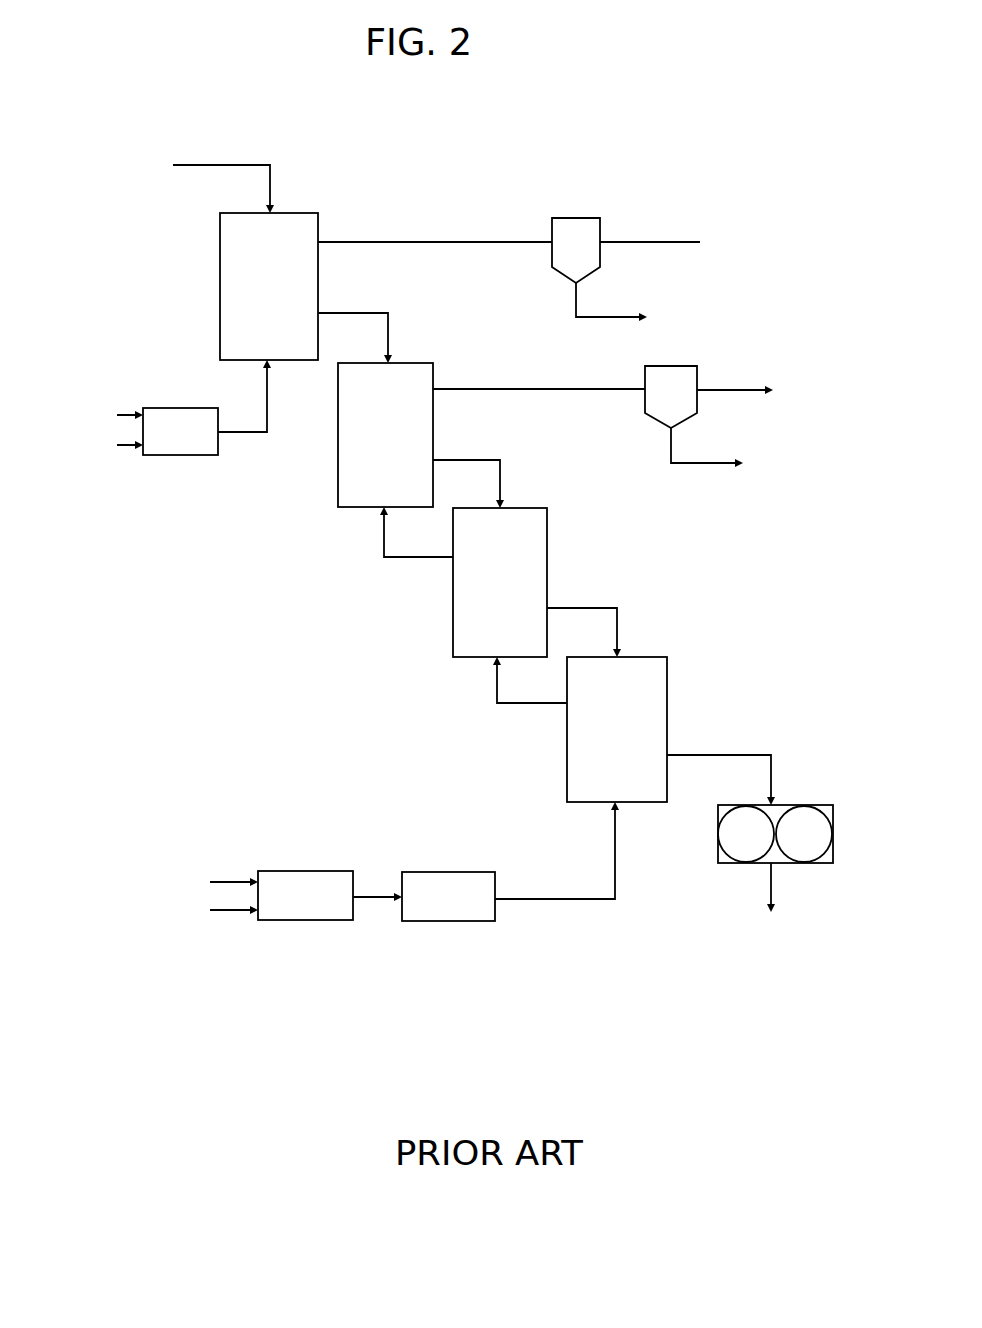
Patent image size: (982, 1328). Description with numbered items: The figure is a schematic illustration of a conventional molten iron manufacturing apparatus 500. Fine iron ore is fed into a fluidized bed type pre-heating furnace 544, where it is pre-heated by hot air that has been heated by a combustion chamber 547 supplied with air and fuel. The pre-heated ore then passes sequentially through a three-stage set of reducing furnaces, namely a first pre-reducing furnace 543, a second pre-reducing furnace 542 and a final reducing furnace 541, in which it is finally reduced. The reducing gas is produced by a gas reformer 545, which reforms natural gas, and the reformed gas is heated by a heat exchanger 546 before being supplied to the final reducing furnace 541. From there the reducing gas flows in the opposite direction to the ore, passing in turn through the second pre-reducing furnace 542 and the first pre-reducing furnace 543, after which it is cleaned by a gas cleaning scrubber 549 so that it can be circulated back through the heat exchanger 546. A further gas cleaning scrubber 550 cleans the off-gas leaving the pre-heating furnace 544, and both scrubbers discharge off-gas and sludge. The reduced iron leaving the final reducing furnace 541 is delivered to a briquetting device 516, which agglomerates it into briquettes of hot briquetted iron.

The apparatus 500 is at (503, 155).
The fluidized bed type pre-heating furnace 544 is at (269, 286).
The first pre-reducing furnace 543 is at (385, 435).
The second pre-reducing furnace 542 is at (500, 582).
The final reducing furnace 541 is at (617, 729).
The gas reformer 545 is at (305, 895).
The heat exchanger 546 is at (448, 896).
The combustion chamber 547 is at (180, 431).
The gas cleaning scrubber 549 is at (697, 380).
The gas cleaning scrubber 550 is at (600, 237).
The briquetting device 516 is at (823, 805).